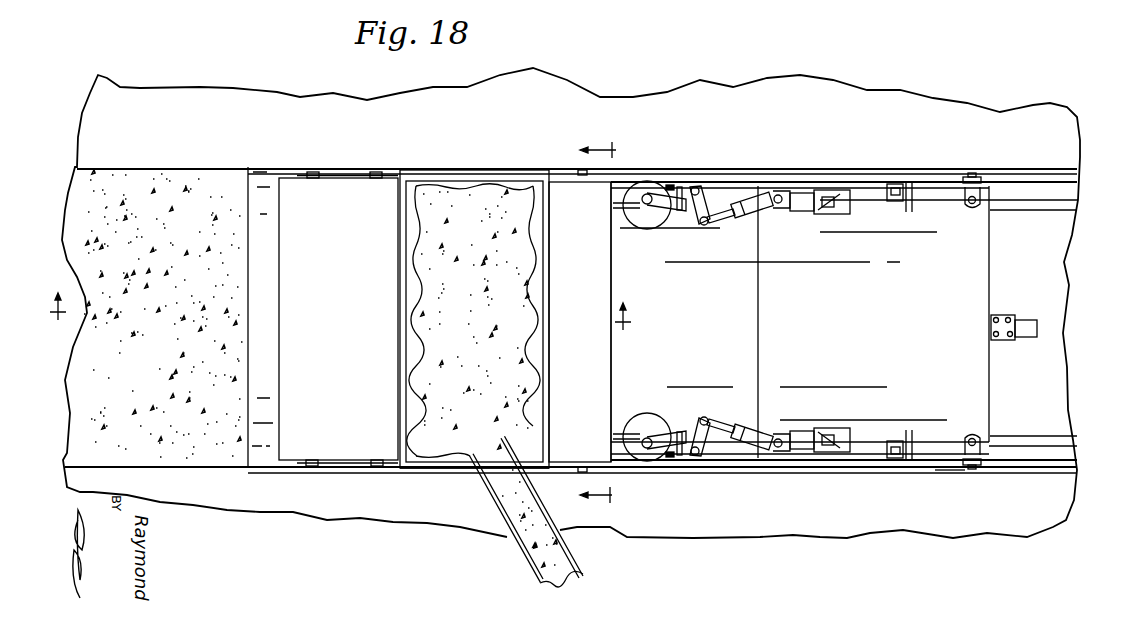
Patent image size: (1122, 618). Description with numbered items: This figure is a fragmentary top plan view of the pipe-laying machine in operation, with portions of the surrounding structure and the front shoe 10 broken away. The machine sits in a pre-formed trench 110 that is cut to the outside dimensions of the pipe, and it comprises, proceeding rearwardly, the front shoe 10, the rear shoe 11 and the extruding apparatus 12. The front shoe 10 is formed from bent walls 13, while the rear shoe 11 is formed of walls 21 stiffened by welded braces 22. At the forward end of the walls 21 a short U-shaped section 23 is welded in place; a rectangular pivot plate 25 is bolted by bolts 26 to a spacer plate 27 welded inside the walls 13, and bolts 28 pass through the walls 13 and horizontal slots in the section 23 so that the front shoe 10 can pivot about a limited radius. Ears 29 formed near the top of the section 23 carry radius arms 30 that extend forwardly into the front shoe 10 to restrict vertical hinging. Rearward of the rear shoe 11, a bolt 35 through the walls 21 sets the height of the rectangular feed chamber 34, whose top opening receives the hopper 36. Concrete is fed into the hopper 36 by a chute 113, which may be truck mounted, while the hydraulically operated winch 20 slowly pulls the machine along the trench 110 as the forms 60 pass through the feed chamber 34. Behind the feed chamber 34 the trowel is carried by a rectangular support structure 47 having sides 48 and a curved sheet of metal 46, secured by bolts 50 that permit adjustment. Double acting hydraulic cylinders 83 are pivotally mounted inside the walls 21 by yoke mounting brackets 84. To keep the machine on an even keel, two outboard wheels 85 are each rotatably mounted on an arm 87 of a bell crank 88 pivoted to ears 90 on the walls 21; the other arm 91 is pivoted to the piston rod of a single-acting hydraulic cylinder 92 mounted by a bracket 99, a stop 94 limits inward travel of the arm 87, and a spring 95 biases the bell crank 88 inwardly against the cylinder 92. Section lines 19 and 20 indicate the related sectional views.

The front shoe 10 is at (1018, 160).
The rear shoe 11 is at (651, 142).
The extruding apparatus 12 is at (418, 165).
The walls 13 is at (1024, 183).
The section line 19 is at (337, 322).
The winch 20 is at (612, 325).
The walls 21 is at (822, 183).
The braces 22 is at (900, 450).
The U-shaped section 23 is at (950, 470).
The pivot plate 25 is at (1005, 342).
The bolts 26 is at (1004, 316).
The spacer plate 27 is at (1032, 318).
The bolts 28 is at (970, 176).
The ears 29 is at (970, 205).
The radius arms 30 is at (1036, 206).
The feed chamber 34 is at (556, 310).
The bolt 35 is at (584, 170).
The hopper 36 is at (434, 469).
The curved sheet of metal 46 is at (263, 462).
The support structure 47 is at (316, 315).
The sides 48 is at (308, 173).
The bolts 50 is at (325, 174).
The forms 60 is at (690, 308).
The double acting hydraulic cylinders 83 is at (770, 213).
The yoke mounting brackets 84 is at (830, 201).
The outboard wheels 85 is at (645, 218).
The arm 87 is at (658, 198).
The bell crank 88 is at (689, 222).
The ears 90 is at (700, 188).
The arm 91 is at (720, 200).
The single-acting hydraulic cylinder 92 is at (742, 216).
The stop 94 is at (680, 211).
The spring 95 is at (678, 186).
The bracket 99 is at (781, 192).
The trench 110 is at (174, 466).
The chute 113 is at (507, 549).